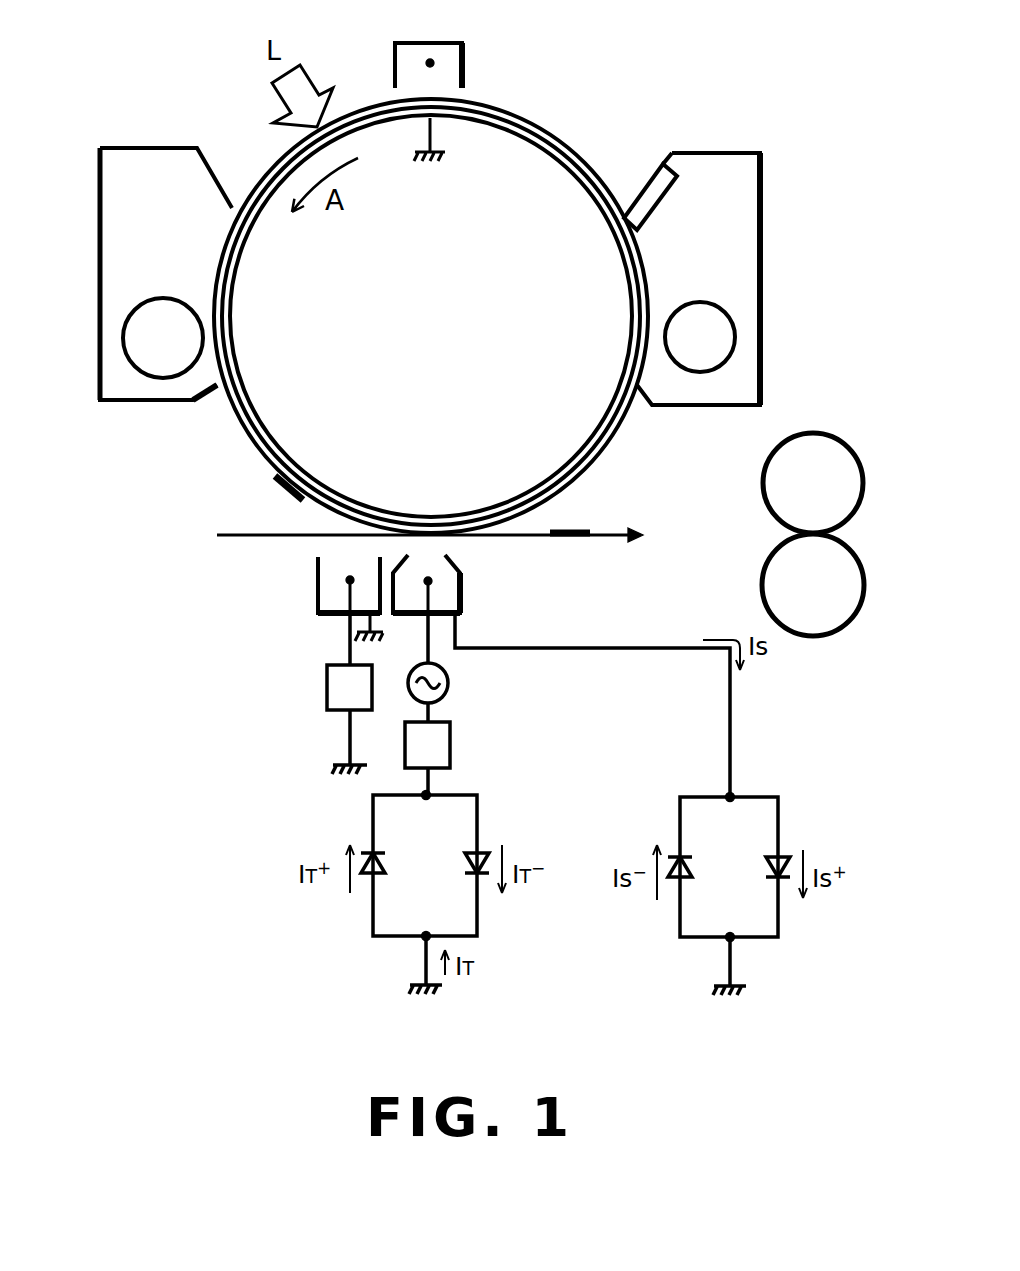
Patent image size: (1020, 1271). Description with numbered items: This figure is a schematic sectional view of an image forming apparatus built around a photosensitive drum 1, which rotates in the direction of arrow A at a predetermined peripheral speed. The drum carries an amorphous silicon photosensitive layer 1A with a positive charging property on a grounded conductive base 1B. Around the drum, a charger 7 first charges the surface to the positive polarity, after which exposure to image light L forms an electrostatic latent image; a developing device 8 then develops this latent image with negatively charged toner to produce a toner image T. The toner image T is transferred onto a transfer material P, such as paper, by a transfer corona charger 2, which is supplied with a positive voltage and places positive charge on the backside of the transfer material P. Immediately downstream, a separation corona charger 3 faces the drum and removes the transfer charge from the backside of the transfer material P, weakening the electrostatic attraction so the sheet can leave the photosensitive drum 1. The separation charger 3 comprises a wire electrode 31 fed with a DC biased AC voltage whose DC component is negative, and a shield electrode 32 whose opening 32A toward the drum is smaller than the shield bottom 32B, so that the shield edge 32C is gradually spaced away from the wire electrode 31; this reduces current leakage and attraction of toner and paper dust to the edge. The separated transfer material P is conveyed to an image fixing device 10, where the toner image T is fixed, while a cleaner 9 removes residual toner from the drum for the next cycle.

The photosensitive drum 1 is at (435, 296).
The photosensitive layer 1A is at (536, 124).
The conductive base 1B is at (552, 155).
The transfer corona charger 2 is at (425, 616).
The separation corona charger 3 is at (469, 677).
The charger 7 is at (462, 86).
The developing device 8 is at (100, 248).
The cleaner 9 is at (762, 268).
The image fixing device 10 is at (860, 462).
The wire electrode 31 is at (438, 582).
The shield electrode 32 is at (514, 595).
The opening 32A is at (430, 548).
The shield bottom 32B is at (457, 618).
The shield edge 32C is at (408, 557).
The transfer material P is at (443, 545).
The toner image T is at (282, 487).